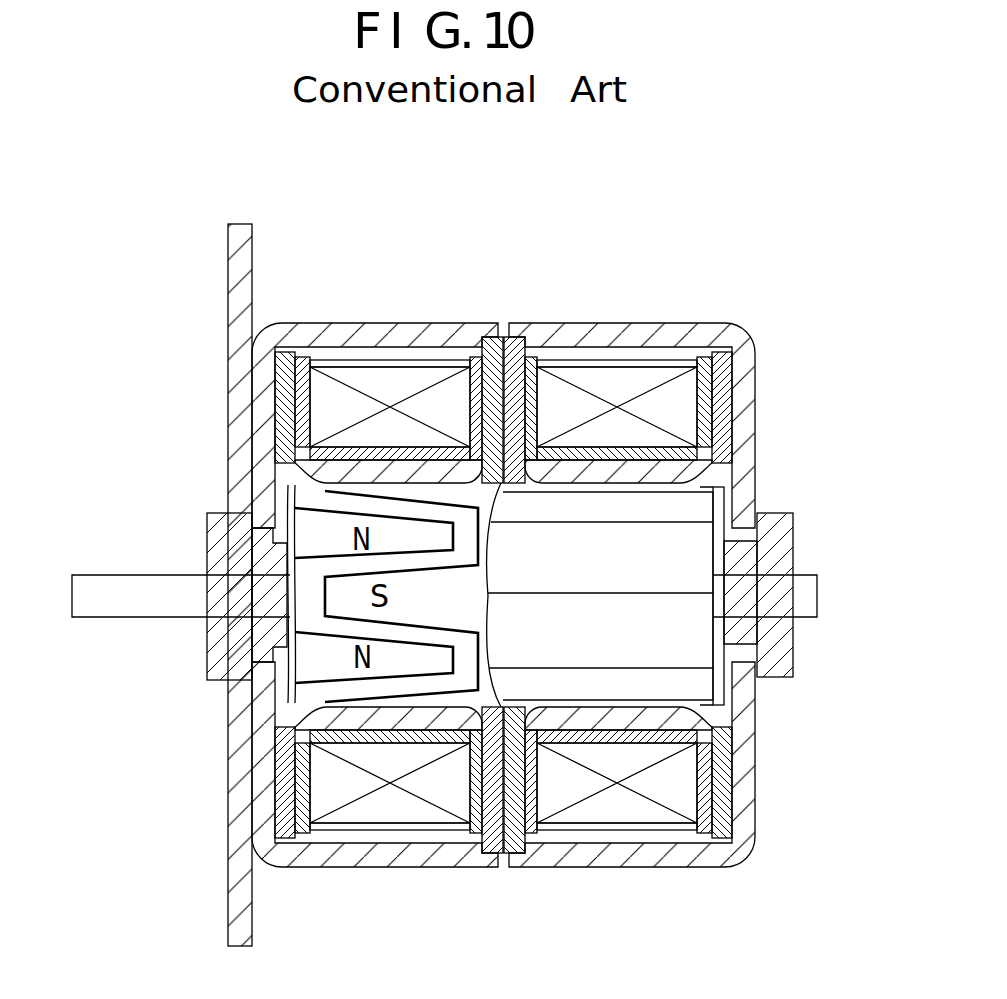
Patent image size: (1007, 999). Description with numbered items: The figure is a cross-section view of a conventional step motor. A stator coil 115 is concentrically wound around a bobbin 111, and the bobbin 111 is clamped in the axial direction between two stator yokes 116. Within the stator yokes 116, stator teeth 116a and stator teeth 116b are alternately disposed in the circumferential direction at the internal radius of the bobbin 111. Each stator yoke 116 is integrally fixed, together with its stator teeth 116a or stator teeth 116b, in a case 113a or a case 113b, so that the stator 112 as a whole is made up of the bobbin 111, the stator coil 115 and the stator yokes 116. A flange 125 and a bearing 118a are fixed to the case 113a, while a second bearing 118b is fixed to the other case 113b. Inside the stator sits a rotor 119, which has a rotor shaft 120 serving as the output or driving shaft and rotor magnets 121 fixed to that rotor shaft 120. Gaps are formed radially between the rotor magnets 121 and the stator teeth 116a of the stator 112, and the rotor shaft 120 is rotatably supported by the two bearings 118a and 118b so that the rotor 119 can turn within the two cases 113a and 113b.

The bobbin 111 is at (462, 366).
The stator 112 is at (530, 250).
The case 113a is at (266, 330).
The case 113b is at (745, 377).
The stator coil 115 is at (372, 362).
The stator yoke 116 is at (284, 354).
The stator teeth 116a is at (300, 669).
The stator teeth 116b is at (333, 596).
The bearing 118a is at (215, 530).
The second bearing 118b is at (780, 537).
The rotor 119 is at (718, 500).
The rotor shaft 120 is at (87, 587).
The rotor magnets 121 is at (690, 655).
The flange 125 is at (240, 235).